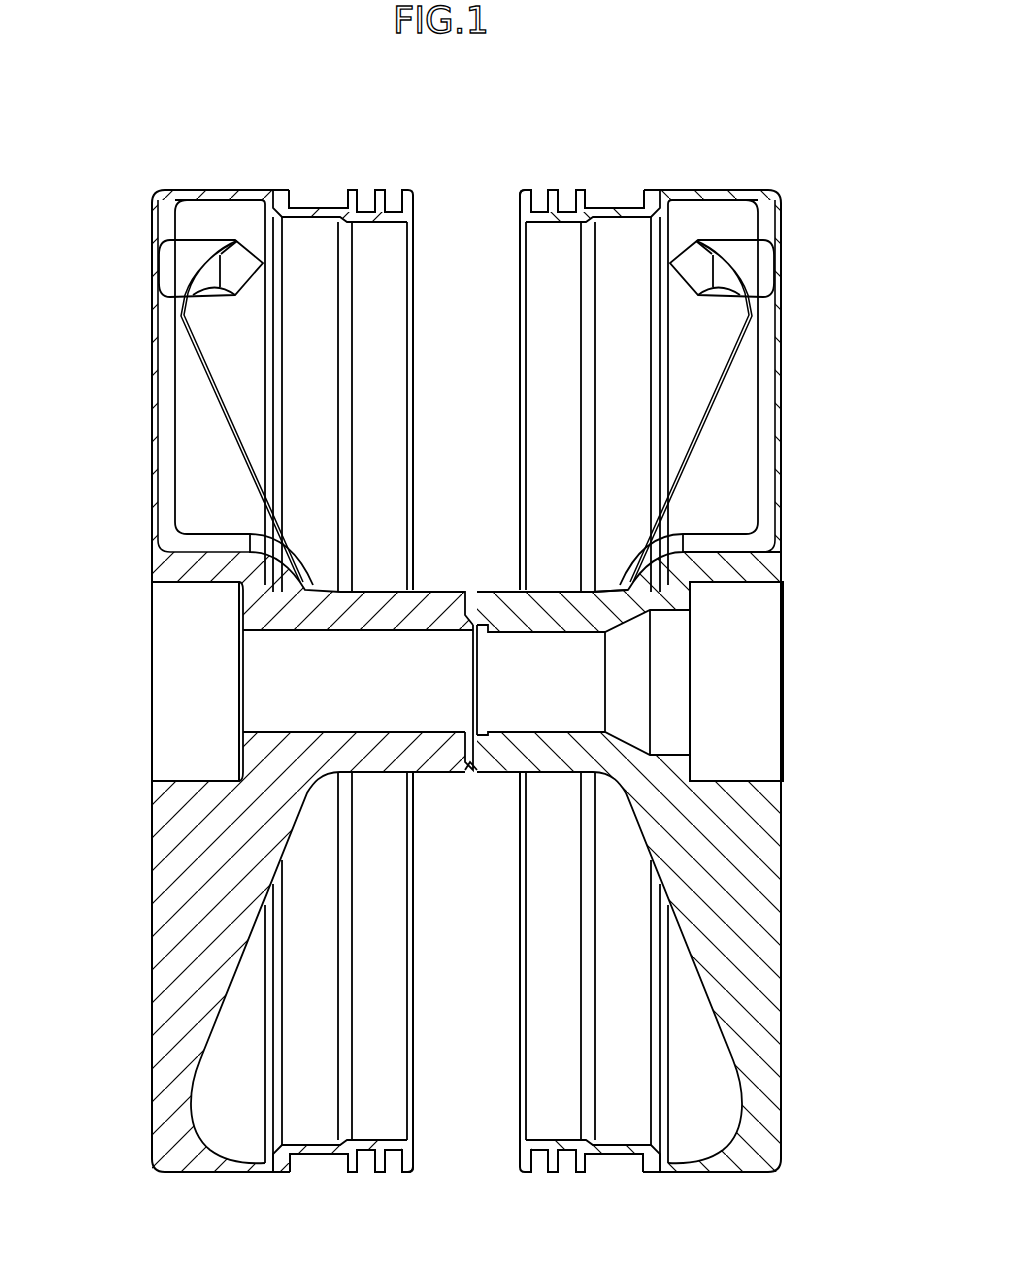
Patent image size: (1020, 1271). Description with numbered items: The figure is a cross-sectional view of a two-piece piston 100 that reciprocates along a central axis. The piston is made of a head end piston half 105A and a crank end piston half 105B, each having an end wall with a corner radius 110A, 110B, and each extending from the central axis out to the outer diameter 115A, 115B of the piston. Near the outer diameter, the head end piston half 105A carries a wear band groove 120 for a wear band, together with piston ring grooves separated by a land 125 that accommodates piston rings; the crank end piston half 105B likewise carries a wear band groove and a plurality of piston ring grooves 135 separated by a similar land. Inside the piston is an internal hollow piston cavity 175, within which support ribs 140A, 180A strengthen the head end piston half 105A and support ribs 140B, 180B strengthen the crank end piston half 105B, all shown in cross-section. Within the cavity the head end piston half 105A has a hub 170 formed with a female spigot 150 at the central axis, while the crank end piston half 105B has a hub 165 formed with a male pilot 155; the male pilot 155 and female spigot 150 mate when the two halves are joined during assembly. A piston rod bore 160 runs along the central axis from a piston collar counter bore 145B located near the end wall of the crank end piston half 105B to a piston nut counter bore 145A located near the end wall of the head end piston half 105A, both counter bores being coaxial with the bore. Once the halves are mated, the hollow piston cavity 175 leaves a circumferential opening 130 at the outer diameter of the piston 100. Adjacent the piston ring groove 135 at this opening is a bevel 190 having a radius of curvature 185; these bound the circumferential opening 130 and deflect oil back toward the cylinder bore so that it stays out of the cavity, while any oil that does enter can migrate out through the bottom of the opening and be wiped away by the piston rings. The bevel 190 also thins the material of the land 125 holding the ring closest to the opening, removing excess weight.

The piston 100 is at (222, 93).
The head end piston half 105A is at (782, 385).
The crank end piston half 105B is at (152, 393).
The corner radius 110A is at (782, 193).
The corner radius 110B is at (155, 197).
The outer diameter 115A is at (707, 188).
The outer diameter 115B is at (227, 187).
The wear band groove 120 is at (617, 205).
The land 125 is at (553, 190).
The circumferential opening 130 is at (467, 195).
The piston ring grooves 135 is at (397, 208).
The support rib 140A is at (695, 515).
The support rib 140B is at (190, 517).
The piston nut counter bore 145A is at (768, 735).
The piston collar counter bore 145B is at (177, 737).
The female spigot 150 is at (478, 738).
The male pilot 155 is at (471, 629).
The piston rod bore 160 is at (506, 704).
The hub 165 is at (378, 617).
The hub 170 is at (506, 617).
The internal hollow piston cavity 175 is at (453, 438).
The support rib 180A is at (707, 933).
The support rib 180B is at (180, 933).
The radius of curvature 185 is at (418, 1138).
The bevel 190 is at (415, 1167).